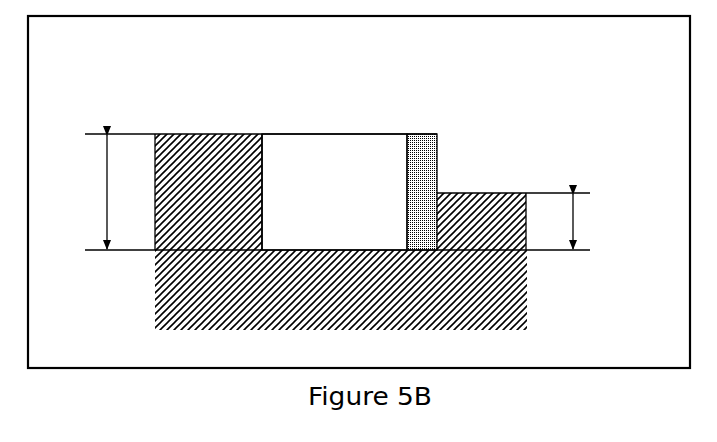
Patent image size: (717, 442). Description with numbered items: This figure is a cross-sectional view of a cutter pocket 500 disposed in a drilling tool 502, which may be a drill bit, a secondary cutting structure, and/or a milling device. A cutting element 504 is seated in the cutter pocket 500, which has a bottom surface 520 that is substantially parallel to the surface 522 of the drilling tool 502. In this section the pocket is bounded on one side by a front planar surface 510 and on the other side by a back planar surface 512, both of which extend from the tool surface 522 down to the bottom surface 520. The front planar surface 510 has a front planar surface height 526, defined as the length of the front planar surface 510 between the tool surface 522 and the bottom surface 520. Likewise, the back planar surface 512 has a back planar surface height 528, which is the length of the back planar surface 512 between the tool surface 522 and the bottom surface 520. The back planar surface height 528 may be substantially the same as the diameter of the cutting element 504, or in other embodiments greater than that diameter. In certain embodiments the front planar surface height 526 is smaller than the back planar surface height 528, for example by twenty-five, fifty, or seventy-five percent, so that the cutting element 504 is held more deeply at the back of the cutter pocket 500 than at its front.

The cutter pocket 500 is at (480, 119).
The drilling tool 502 is at (237, 297).
The cutting element 504 is at (360, 209).
The front planar surface 510 is at (440, 210).
The back planar surface 512 is at (262, 188).
The bottom surface 520 is at (380, 252).
The surface of drilling tool 522 is at (213, 135).
The front planar surface height 526 is at (602, 221).
The back planar surface height 528 is at (77, 192).